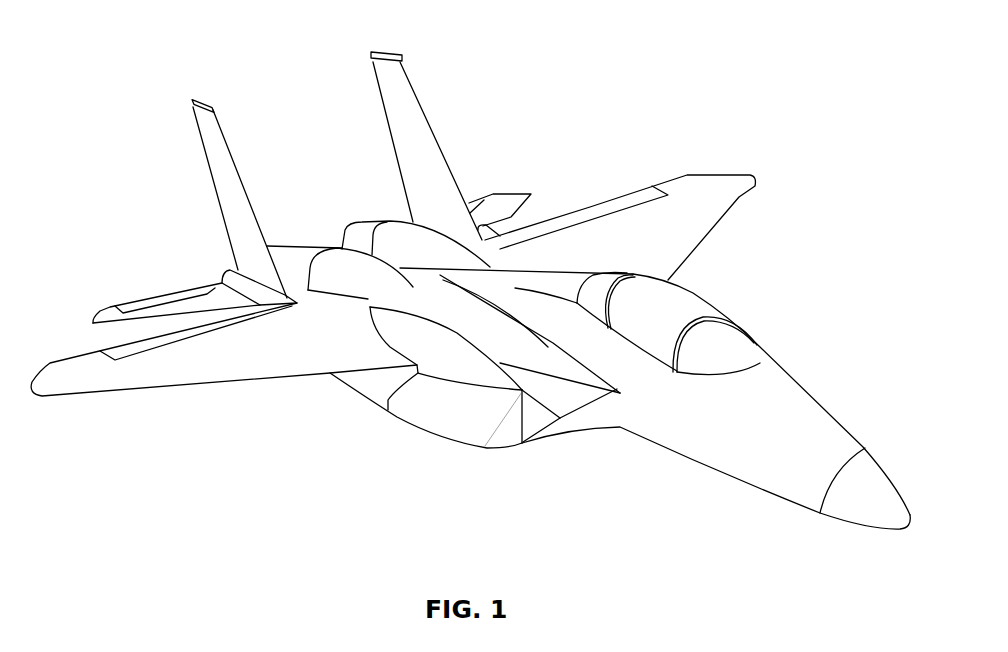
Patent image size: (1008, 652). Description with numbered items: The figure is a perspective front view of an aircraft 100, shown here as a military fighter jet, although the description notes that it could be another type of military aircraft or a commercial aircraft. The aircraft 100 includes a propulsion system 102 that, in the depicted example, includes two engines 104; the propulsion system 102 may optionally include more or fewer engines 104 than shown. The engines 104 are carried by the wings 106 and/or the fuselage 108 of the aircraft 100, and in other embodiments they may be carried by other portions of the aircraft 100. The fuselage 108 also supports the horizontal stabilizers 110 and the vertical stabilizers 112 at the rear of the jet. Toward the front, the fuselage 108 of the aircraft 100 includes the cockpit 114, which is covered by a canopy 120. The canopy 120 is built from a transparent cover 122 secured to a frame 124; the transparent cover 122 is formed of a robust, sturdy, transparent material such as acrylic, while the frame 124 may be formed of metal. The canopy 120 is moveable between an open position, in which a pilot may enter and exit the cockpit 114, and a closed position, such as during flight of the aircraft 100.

The aircraft 100 is at (145, 59).
The propulsion system 102 is at (504, 510).
The engine 104 is at (755, 347).
The wing 106 is at (233, 385).
The fuselage 108 is at (440, 425).
The horizontal stabilizer 110 is at (185, 287).
The vertical stabilizer 112 is at (233, 162).
The cockpit 114 is at (684, 301).
The canopy 120 is at (667, 332).
The transparent cover 122 is at (650, 293).
The frame 124 is at (706, 318).